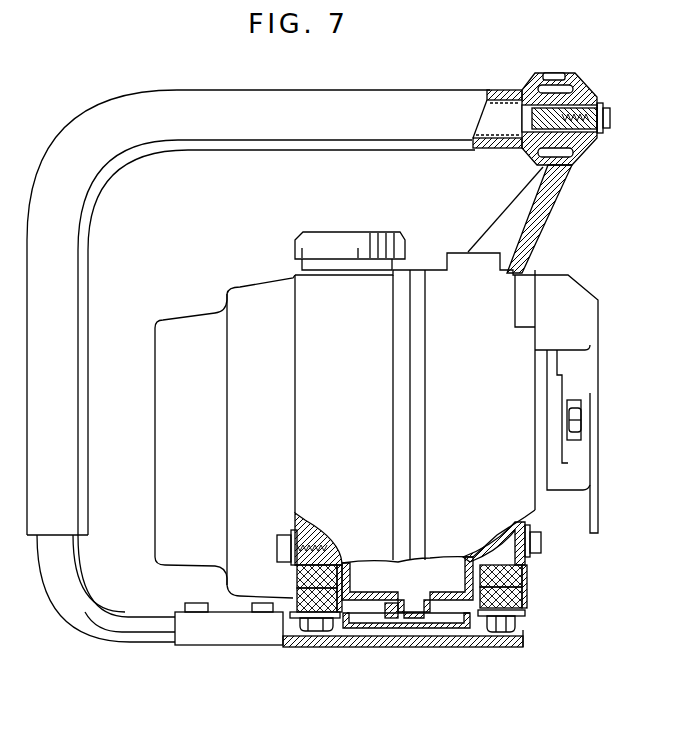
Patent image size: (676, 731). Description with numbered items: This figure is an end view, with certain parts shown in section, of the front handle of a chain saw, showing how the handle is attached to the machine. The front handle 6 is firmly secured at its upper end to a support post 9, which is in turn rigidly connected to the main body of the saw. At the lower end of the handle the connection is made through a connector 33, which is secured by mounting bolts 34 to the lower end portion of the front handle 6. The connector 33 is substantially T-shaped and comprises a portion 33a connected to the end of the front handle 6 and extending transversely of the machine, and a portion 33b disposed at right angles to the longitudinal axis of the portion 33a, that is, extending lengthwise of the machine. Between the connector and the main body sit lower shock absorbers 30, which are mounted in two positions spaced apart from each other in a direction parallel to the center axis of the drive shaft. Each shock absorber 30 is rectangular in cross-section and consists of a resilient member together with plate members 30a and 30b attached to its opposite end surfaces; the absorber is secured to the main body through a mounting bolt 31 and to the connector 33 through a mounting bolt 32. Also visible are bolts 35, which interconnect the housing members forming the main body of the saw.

The front handle 6 is at (401, 126).
The support post 9 is at (502, 213).
The lower shock absorber 30 is at (527, 595).
The plate member 30a is at (527, 568).
The plate member 30b is at (527, 608).
The mounting bolt 31 is at (541, 548).
The mounting bolt 32 is at (510, 643).
The connector 33 is at (217, 640).
The portion 33a is at (405, 632).
The portion 33b is at (470, 630).
The mounting bolt 34 is at (192, 602).
The bolt 35 is at (388, 603).